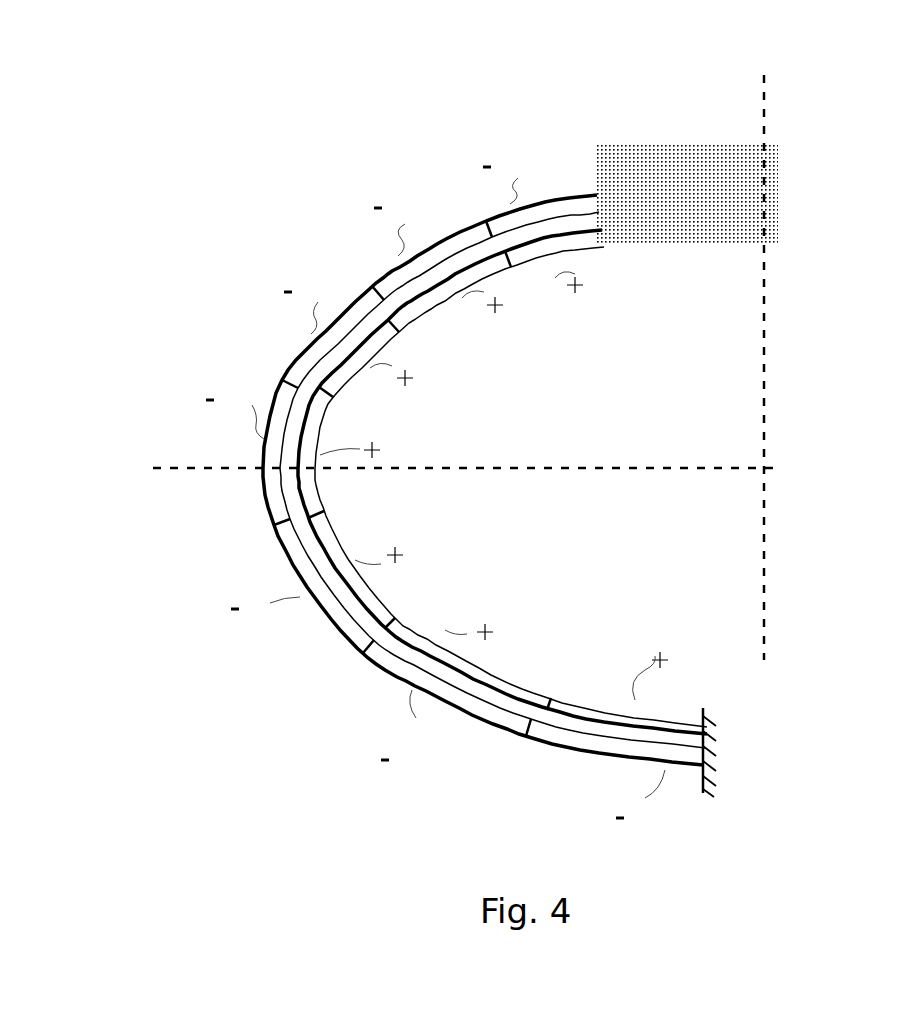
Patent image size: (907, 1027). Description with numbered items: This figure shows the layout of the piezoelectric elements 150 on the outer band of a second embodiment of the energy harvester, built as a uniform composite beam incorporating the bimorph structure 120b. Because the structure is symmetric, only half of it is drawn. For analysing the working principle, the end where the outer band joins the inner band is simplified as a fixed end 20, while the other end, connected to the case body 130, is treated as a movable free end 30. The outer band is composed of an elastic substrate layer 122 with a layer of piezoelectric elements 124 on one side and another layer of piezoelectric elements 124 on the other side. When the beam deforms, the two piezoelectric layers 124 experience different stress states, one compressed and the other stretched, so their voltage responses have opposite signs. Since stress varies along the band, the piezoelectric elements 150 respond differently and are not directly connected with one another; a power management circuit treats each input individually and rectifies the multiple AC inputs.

The bimorph structure 120b is at (450, 232).
The elastic substrate layer 122 is at (403, 298).
The layer of piezoelectric elements 124 is at (300, 362).
The piezoelectric elements 150 is at (268, 492).
The case body 130 is at (632, 165).
The free end 30 is at (770, 125).
The fixed end 20 is at (728, 762).